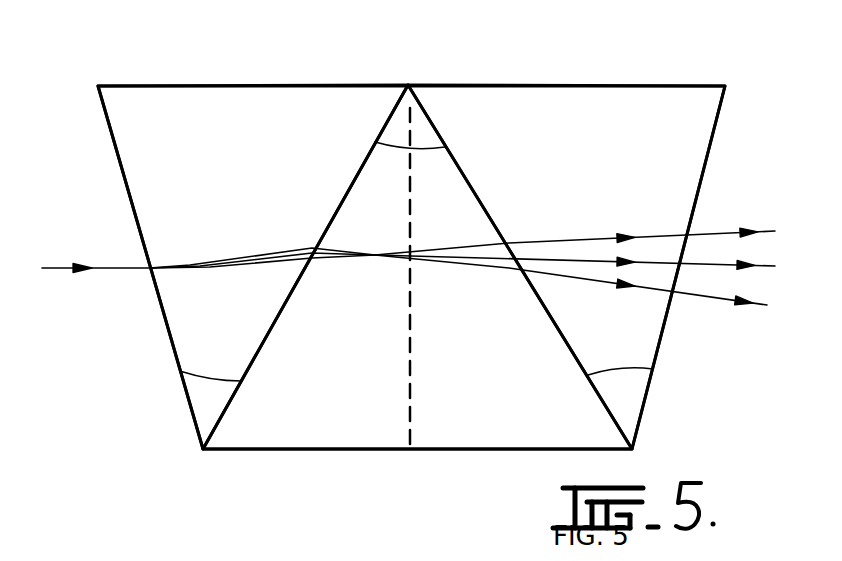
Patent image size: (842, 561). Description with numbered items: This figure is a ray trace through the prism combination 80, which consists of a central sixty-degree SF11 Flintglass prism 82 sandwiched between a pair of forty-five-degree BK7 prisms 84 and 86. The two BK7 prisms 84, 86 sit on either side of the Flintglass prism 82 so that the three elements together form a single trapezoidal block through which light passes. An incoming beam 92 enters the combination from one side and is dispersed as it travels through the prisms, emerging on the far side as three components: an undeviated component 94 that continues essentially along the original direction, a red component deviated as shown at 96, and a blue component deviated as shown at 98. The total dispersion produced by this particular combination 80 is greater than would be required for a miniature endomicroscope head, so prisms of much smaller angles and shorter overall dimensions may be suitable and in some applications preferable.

The prism combination 80 is at (121, 68).
The central 60° SF11 Flintglass prism 82 is at (362, 450).
The 45° BK7 prism 84 is at (262, 87).
The 45° BK7 prism 86 is at (632, 88).
The incoming beam 92 is at (118, 271).
The undeviated component 94 is at (705, 266).
The red deviated component 96 is at (722, 232).
The blue deviated component 98 is at (722, 300).